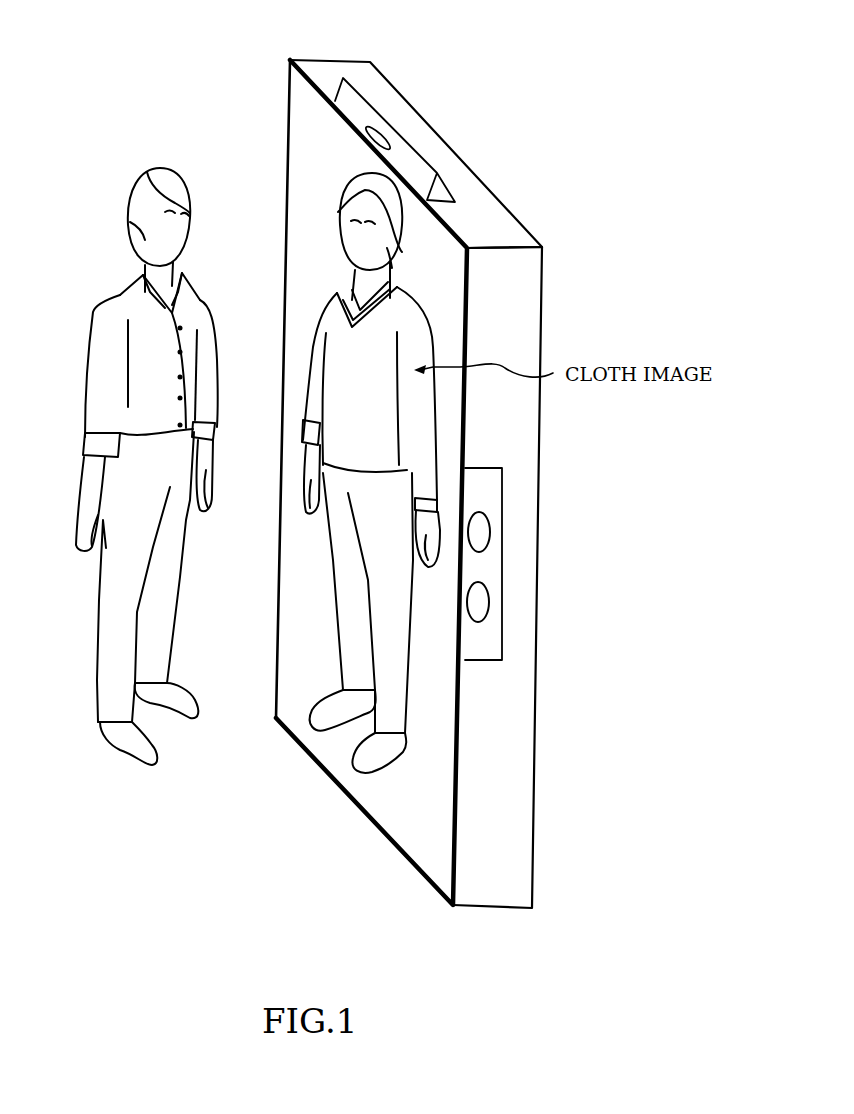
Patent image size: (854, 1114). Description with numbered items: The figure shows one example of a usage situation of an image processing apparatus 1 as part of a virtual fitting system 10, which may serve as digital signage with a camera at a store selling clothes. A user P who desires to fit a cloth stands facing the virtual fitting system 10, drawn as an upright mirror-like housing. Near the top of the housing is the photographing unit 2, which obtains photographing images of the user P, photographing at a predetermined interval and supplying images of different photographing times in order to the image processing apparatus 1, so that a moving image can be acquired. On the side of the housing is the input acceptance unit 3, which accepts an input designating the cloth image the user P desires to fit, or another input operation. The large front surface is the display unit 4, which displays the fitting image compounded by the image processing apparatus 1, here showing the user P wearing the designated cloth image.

The virtual fitting system 10 is at (402, 56).
The image processing apparatus 1 is at (504, 219).
The photographing unit 2 is at (392, 142).
The input acceptance unit 3 is at (494, 487).
The display unit 4 is at (454, 288).
The user P is at (152, 170).